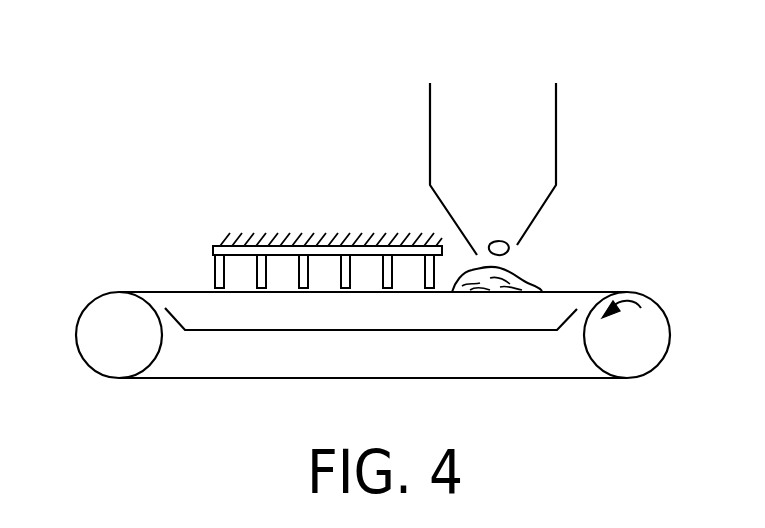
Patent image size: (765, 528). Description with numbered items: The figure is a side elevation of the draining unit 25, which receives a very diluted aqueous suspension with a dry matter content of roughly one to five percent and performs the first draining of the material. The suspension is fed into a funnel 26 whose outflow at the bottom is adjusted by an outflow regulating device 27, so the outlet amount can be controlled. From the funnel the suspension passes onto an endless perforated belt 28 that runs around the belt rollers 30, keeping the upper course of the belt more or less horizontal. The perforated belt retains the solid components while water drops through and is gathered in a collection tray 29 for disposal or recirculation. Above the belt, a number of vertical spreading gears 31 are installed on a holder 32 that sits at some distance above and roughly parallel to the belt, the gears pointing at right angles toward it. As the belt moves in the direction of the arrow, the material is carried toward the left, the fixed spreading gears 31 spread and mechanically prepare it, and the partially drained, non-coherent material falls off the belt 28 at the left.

The draining unit 25 is at (303, 95).
The funnel 26 is at (557, 128).
The outflow regulating device 27 is at (512, 242).
The endless perforated belt 28 is at (602, 292).
The collection tray 29 is at (477, 333).
The belt rollers 30 is at (85, 310).
The spreading gears 31 is at (262, 276).
The holder 32 is at (290, 252).